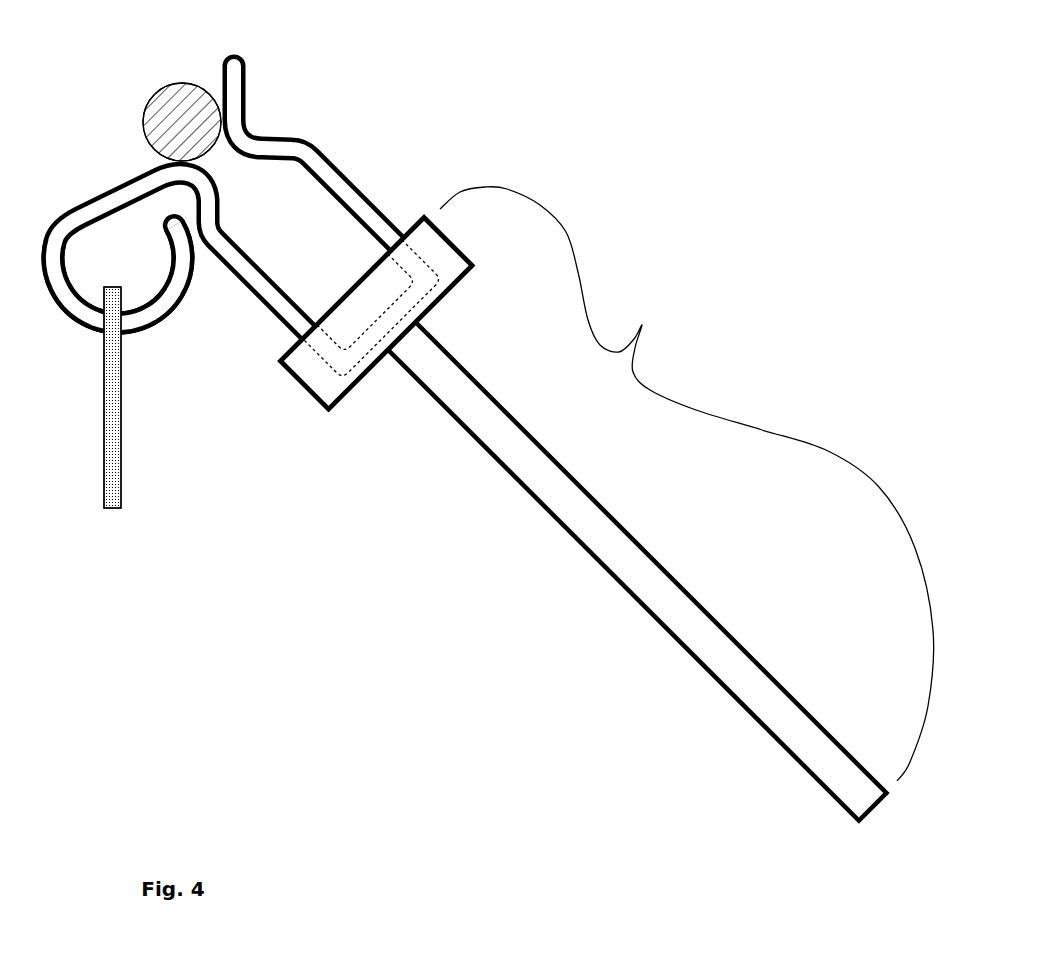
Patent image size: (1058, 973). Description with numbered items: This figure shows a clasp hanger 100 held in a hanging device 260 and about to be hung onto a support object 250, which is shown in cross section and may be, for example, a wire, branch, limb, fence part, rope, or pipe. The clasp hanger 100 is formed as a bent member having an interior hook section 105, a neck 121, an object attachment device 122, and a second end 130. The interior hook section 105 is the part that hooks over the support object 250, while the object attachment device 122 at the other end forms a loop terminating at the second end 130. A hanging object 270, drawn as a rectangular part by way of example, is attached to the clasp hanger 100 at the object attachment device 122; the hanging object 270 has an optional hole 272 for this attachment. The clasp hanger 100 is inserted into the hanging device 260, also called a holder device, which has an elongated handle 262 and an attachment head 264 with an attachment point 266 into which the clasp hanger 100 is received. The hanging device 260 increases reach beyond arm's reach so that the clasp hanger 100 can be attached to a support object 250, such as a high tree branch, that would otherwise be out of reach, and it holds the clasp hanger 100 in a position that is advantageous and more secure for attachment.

The clasp hanger 100 is at (233, 46).
The interior hook section 105 is at (319, 279).
The neck 121 is at (210, 176).
The object attachment device 122 is at (45, 271).
The second end 130 is at (151, 254).
The support object 250 is at (152, 104).
The hanging device 260 is at (687, 484).
The handle 262 is at (588, 553).
The attachment head 264 is at (461, 282).
The attachment point 266 is at (313, 296).
The hanging object 270 is at (104, 416).
The hole 272 is at (138, 345).